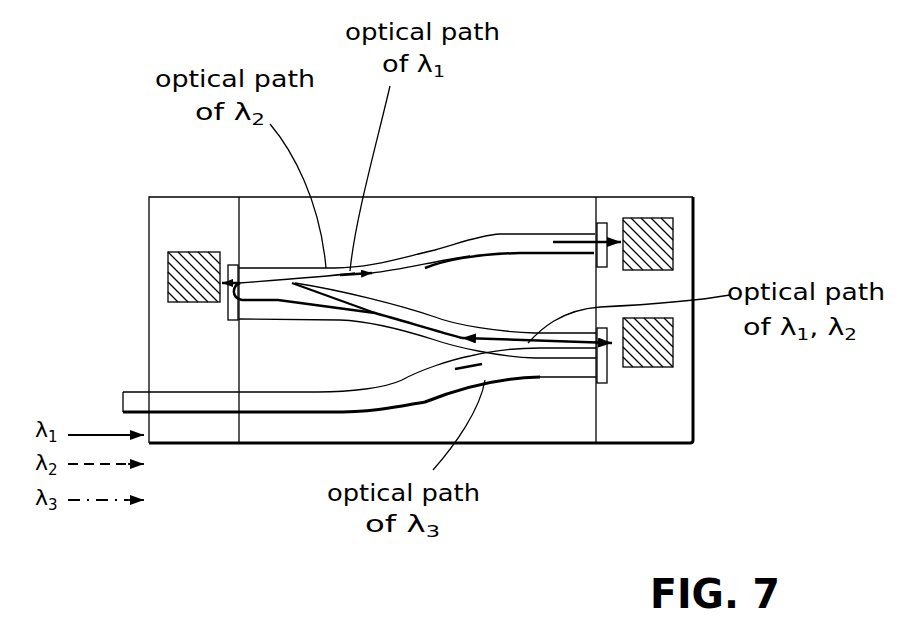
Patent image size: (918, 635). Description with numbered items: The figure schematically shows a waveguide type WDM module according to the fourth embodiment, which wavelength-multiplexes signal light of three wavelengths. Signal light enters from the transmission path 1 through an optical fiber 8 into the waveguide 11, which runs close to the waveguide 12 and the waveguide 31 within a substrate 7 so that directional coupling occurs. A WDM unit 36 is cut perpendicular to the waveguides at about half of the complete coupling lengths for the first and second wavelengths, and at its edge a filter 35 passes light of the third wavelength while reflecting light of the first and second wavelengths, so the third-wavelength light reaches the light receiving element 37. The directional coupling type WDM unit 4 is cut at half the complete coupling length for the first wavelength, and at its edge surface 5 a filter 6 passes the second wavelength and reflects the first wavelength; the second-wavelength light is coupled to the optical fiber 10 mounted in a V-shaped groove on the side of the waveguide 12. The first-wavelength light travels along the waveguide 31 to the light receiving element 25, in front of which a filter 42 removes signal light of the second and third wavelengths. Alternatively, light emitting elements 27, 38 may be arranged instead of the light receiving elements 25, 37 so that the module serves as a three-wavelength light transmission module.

The transmission path 1 is at (110, 397).
The directional coupling type WDM unit 4 is at (271, 270).
The edge surface 5 is at (590, 376).
The filter 6 is at (228, 318).
The substrate 7 is at (403, 210).
The optical fiber 8 is at (195, 413).
The optical fiber 10 is at (177, 257).
The waveguide 11 is at (272, 413).
The waveguide 12 is at (420, 307).
The light receiving element 25 is at (698, 203).
The light emitting element 27 is at (647, 218).
The waveguide 31 is at (510, 233).
The filter 35 is at (605, 372).
The WDM unit 36 is at (532, 380).
The light receiving element 37 is at (712, 365).
The light emitting element 38 is at (673, 347).
The filter 42 is at (600, 227).